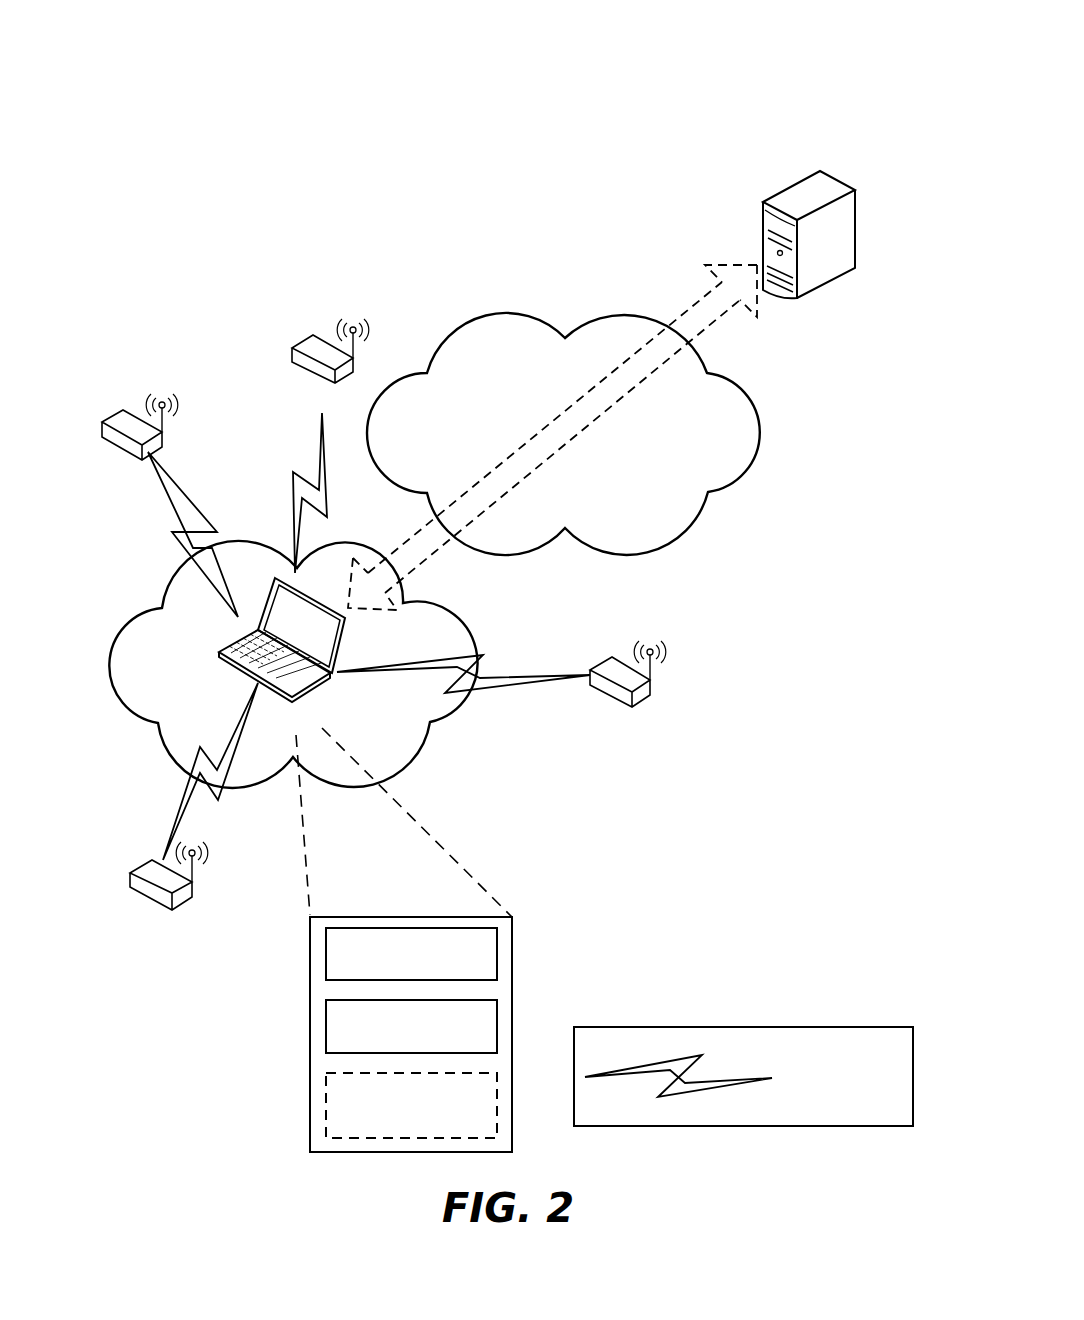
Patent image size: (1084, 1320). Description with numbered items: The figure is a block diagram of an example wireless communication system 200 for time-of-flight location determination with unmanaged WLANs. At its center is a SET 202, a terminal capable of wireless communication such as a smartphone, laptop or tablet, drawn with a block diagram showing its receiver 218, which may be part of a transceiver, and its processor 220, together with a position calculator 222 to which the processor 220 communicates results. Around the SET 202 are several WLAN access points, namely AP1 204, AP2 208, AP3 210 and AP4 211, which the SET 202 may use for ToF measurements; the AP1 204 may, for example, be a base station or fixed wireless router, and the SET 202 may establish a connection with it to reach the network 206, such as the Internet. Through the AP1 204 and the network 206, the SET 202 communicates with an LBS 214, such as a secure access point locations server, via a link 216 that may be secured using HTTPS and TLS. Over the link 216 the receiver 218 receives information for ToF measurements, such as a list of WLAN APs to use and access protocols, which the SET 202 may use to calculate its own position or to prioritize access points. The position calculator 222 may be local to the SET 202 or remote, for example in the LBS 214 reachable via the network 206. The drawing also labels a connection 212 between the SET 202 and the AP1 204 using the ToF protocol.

The wireless communication system 200 is at (758, 32).
The SET 202 is at (411, 1034).
The AP1 204 is at (650, 693).
The network 206 is at (773, 420).
The AP2 208 is at (128, 412).
The AP3 210 is at (300, 338).
The AP4 211 is at (192, 897).
The TOF protocol connection 212 is at (515, 675).
The LBS 214 is at (802, 173).
The communications link 216 is at (685, 305).
The receiver 218 is at (325, 972).
The processor 220 is at (325, 1040).
The position calculator 222 is at (325, 1122).